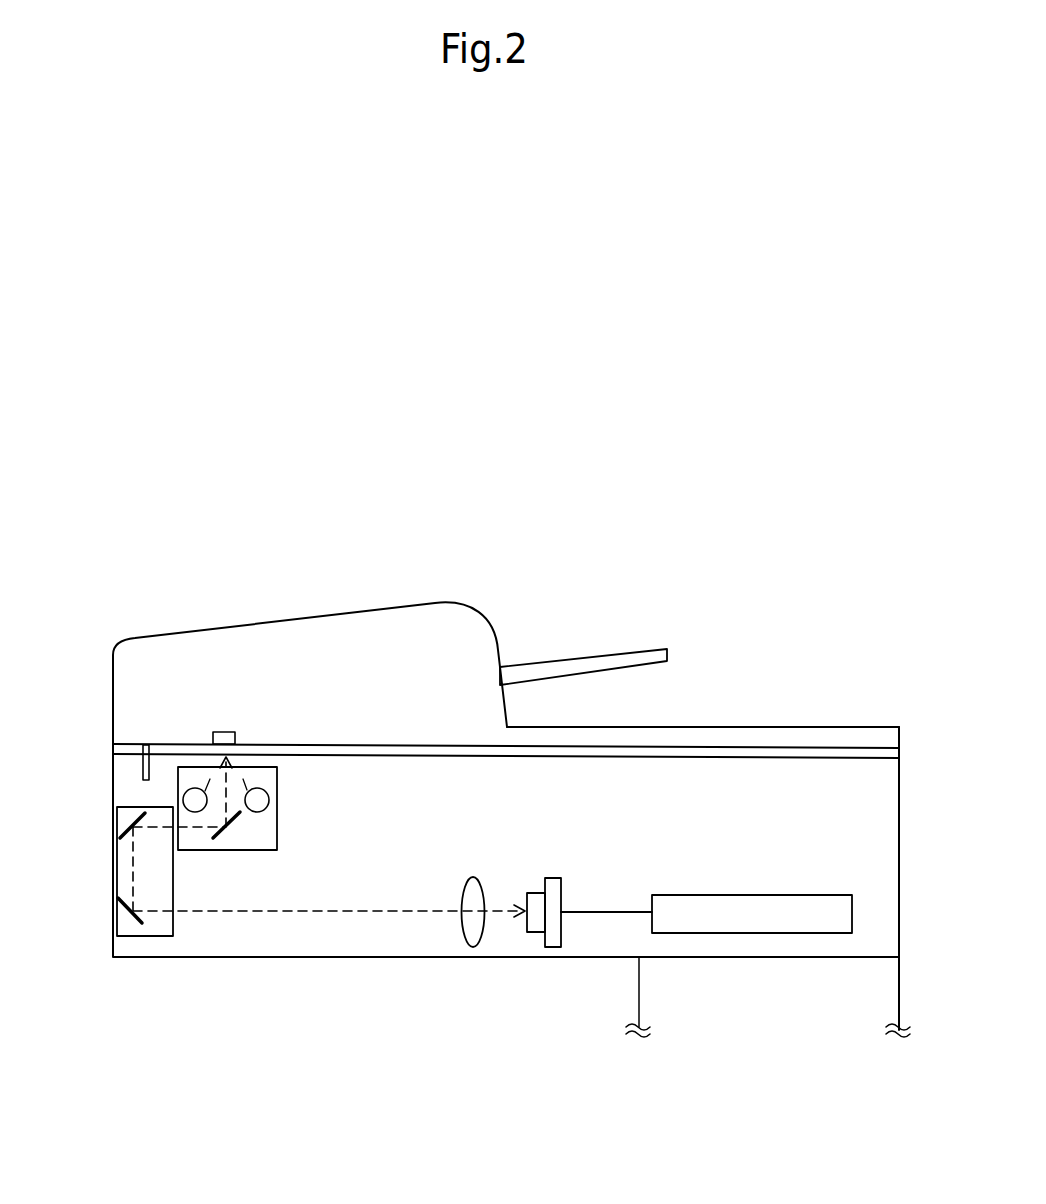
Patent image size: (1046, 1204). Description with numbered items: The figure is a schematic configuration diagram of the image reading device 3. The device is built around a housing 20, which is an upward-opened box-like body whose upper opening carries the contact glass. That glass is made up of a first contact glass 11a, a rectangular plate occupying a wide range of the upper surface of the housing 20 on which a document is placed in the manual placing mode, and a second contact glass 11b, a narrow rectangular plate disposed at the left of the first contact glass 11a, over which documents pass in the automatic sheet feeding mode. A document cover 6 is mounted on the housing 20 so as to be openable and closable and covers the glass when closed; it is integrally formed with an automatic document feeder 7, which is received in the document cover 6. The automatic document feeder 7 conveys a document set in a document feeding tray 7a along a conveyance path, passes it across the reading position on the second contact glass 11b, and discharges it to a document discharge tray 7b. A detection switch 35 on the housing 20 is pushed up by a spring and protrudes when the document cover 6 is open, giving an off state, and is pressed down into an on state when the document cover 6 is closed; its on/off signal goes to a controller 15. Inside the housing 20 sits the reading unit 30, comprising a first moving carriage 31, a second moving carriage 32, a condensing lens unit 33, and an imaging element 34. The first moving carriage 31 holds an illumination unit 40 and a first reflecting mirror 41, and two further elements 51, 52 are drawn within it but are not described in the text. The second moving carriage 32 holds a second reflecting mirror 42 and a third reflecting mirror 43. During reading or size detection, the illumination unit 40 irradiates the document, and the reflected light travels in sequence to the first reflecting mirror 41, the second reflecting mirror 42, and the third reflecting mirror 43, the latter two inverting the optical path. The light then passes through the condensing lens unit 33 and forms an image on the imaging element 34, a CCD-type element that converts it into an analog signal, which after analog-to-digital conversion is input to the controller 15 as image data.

The image reading device 3 is at (580, 515).
The document cover 6 is at (363, 610).
The automatic document feeder 7 is at (213, 632).
The document feeding tray 7a is at (557, 658).
The document discharge tray 7b is at (663, 727).
The first contact glass 11a is at (730, 758).
The second contact glass 11b is at (245, 745).
The controller 15 is at (747, 933).
The housing 20 is at (903, 812).
The reading unit 30 is at (416, 791).
The first moving carriage 31 is at (290, 786).
The second moving carriage 32 is at (143, 949).
The condensing lens unit 33 is at (463, 935).
The imaging element 34 is at (552, 948).
The detection switch 35 is at (140, 770).
The illumination unit 40 is at (273, 831).
The first reflecting mirror 41 is at (220, 838).
The second reflecting mirror 42 is at (122, 830).
The third reflecting mirror 43 is at (125, 922).
The first lamp 51 is at (273, 800).
The second lamp 52 is at (197, 813).